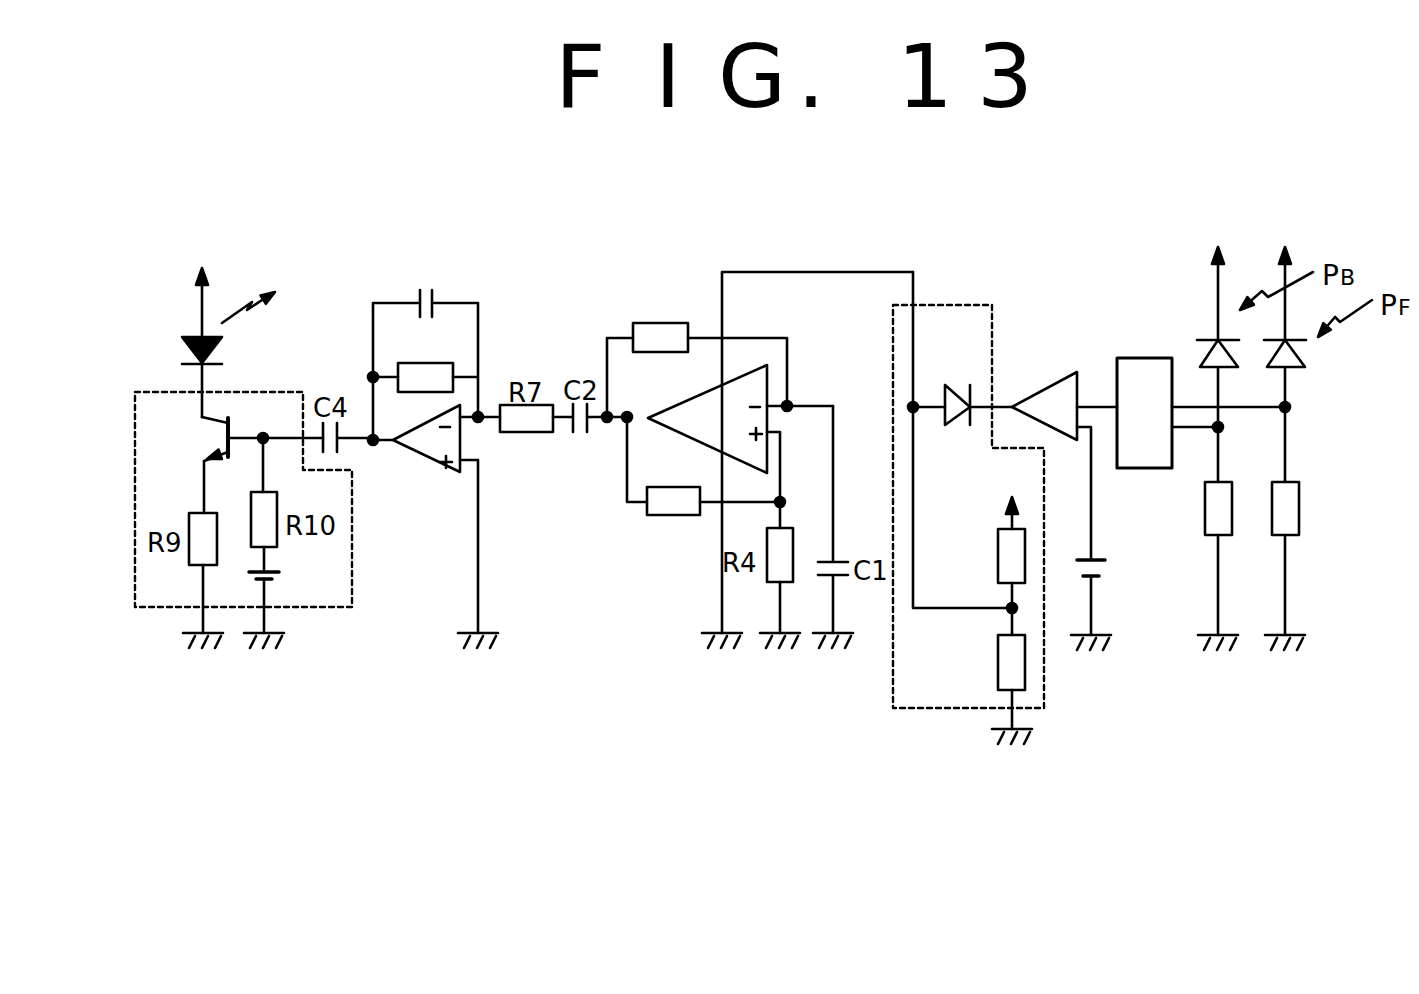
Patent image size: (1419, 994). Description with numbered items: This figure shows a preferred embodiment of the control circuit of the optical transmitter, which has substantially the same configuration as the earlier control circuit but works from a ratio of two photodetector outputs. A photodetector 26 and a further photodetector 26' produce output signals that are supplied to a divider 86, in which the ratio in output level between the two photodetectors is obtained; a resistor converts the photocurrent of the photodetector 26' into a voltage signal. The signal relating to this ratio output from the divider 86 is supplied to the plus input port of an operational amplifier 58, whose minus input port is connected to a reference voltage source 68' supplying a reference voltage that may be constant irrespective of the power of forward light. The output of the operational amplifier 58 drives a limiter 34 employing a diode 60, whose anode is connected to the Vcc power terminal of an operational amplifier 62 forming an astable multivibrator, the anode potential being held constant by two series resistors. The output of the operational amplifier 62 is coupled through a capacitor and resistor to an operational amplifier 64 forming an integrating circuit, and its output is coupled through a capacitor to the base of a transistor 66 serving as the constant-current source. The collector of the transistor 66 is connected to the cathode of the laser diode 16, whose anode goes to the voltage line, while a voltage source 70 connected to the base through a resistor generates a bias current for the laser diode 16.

The laser diode 16 is at (228, 352).
The transistor 66 is at (208, 437).
The voltage source 70 is at (284, 581).
The operational amplifier 64 is at (420, 455).
The operational amplifier 62 is at (685, 400).
The limiter 34 is at (952, 305).
The diode 60 is at (955, 385).
The operational amplifier 58 is at (1053, 385).
The divider 86 is at (1130, 358).
The photodetector 26 is at (1193, 448).
The photodetector 26' is at (1324, 448).
The reference voltage source 68' is at (1119, 568).